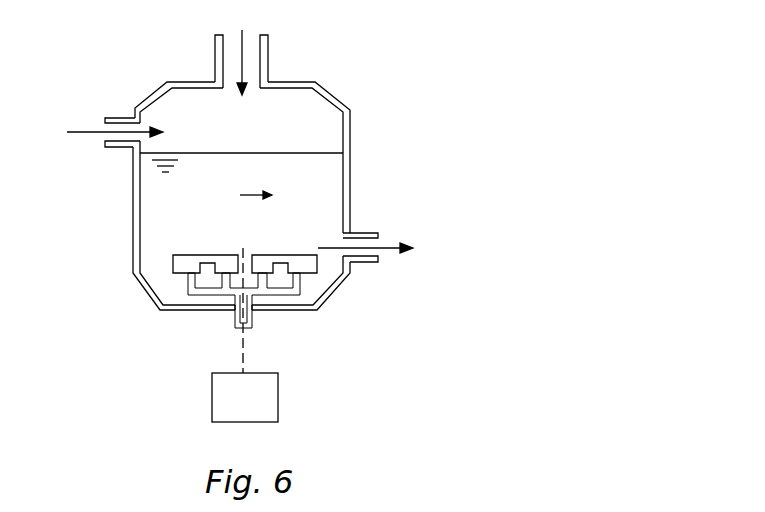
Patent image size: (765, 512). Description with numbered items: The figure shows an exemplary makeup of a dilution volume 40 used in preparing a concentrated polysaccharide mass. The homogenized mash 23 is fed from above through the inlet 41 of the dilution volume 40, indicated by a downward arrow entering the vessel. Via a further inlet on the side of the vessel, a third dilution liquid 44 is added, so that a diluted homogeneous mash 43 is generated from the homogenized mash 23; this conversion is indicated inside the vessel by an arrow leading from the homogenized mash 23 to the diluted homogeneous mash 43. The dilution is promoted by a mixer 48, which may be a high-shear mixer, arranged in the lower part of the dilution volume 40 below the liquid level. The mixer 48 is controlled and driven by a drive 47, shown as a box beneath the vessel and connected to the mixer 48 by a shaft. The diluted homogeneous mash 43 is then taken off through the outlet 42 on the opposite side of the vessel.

The dilution volume 40 is at (350, 125).
The inlet in the dilution volume for homogenized mash 41 is at (213, 53).
The homogenized mash 23 is at (210, 208).
The outlet in the dilution volume for diluted homogenized mash 42 is at (368, 231).
The diluted homogeneous mash 43 is at (387, 253).
The third dilution liquid 44 is at (88, 133).
The drive for mixer in the dilution volume 47 is at (263, 370).
The mixer in the dilution volume 48 is at (190, 274).